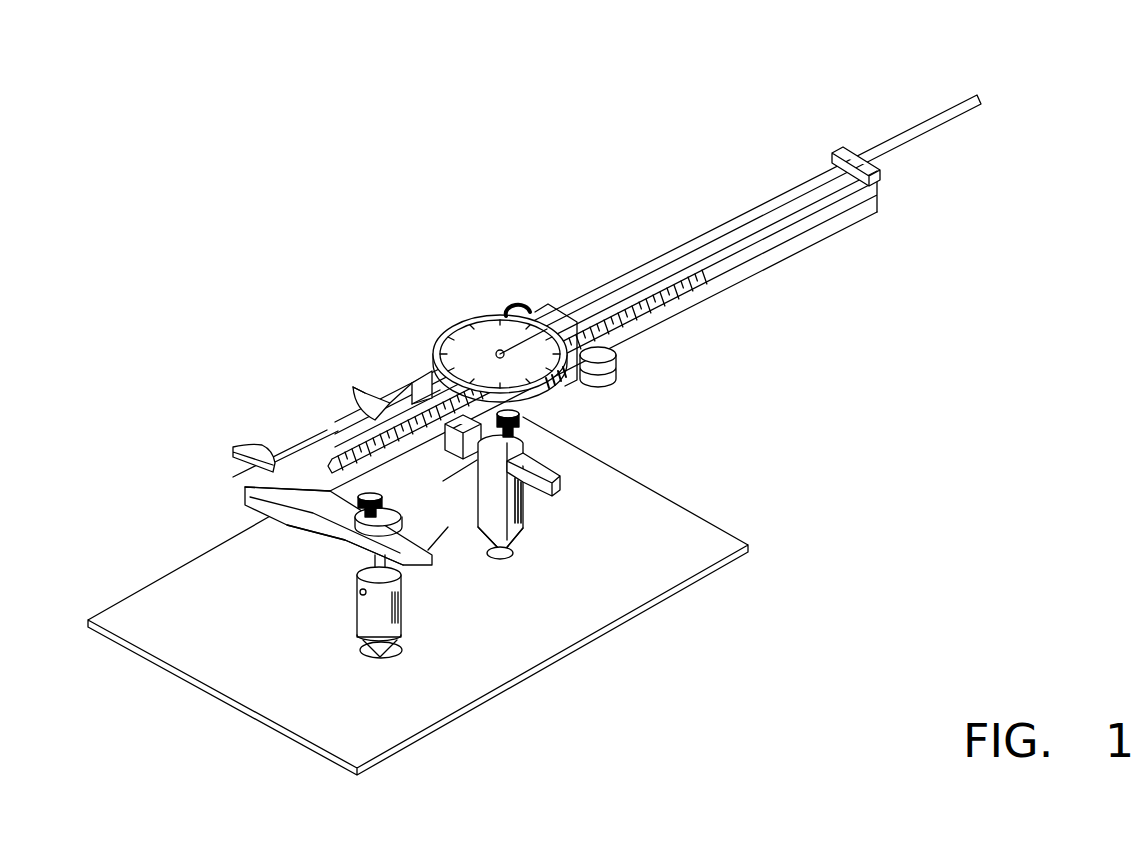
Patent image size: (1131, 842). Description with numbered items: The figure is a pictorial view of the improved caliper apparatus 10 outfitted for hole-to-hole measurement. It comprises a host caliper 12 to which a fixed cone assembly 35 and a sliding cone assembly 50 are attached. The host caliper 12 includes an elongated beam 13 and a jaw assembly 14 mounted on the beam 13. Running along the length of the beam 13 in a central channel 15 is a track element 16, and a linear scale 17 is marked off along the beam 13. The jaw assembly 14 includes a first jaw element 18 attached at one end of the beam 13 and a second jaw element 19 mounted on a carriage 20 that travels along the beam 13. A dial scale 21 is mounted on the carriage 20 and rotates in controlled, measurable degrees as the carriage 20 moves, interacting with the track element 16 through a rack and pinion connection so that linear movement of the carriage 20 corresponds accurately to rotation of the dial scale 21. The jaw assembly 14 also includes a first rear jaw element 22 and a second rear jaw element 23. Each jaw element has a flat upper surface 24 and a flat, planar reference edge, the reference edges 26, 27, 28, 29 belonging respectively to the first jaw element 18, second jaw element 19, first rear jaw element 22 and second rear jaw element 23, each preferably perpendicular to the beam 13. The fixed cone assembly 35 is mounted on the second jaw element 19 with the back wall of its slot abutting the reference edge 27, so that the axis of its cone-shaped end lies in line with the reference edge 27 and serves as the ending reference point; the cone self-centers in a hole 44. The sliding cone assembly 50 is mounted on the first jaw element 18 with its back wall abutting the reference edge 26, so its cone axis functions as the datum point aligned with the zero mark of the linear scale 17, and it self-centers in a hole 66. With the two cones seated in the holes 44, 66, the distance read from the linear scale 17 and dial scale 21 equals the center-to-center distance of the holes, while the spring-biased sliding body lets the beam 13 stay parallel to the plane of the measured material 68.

The improved caliper apparatus 10 is at (492, 158).
The host caliper 12 is at (688, 240).
The elongated beam 13 is at (725, 272).
The jaw assembly 14 is at (350, 382).
The central channel 15 is at (768, 212).
The track element 16 is at (830, 187).
The linear scale 17 is at (317, 490).
The first jaw element 18 is at (327, 540).
The second jaw element 19 is at (552, 478).
The carriage 20 is at (545, 297).
The dial scale 21 is at (470, 333).
The first rear jaw element 22 is at (253, 443).
The second rear jaw element 23 is at (367, 390).
The flat upper surface 24 is at (317, 520).
The reference edge 26 is at (448, 527).
The reference edge 27 is at (530, 493).
The reference edge 28 is at (233, 451).
The reference edge 29 is at (381, 402).
The fixed cone assembly 35 is at (512, 537).
The hole 44 is at (503, 560).
The sliding cone assembly 50 is at (357, 618).
The hole 66 is at (388, 658).
The measured material 68 is at (517, 690).